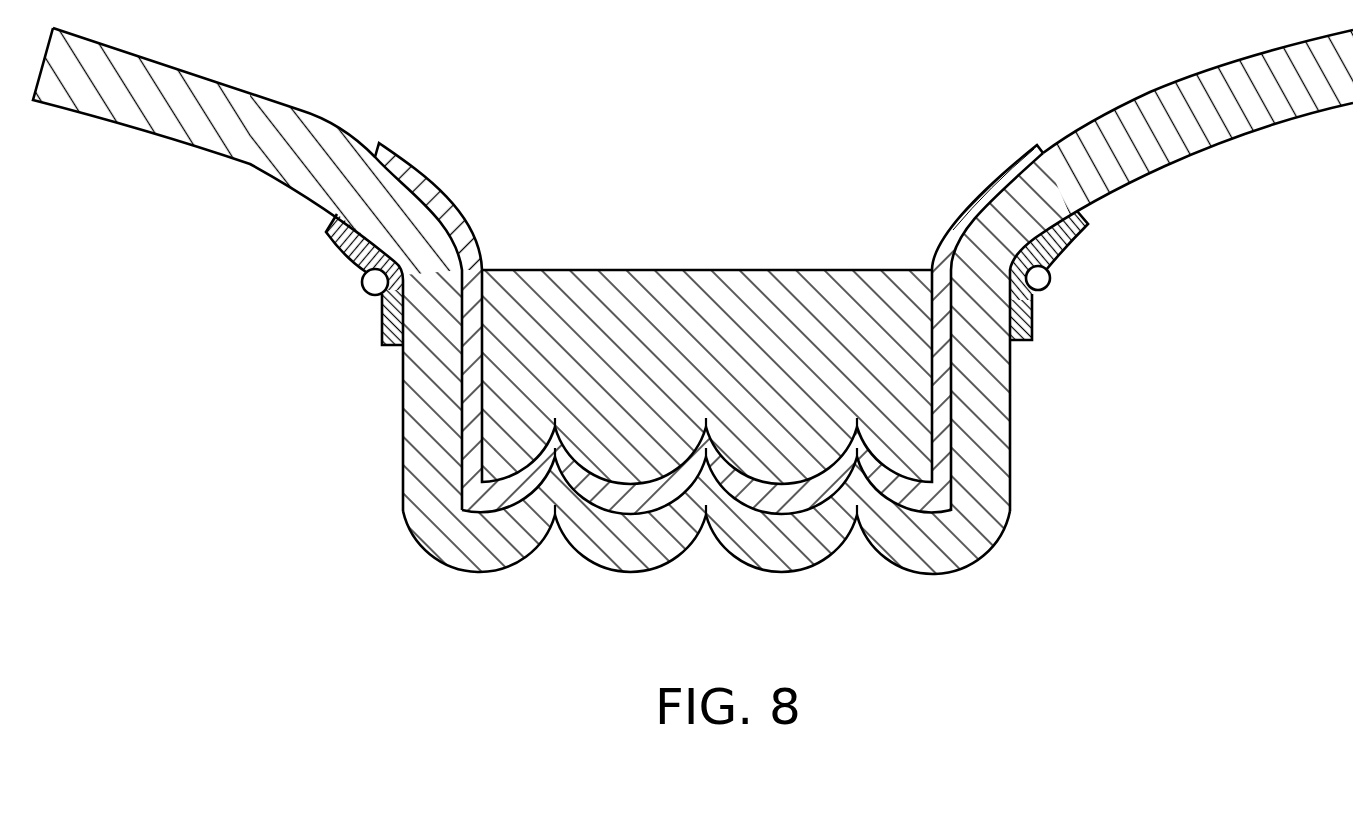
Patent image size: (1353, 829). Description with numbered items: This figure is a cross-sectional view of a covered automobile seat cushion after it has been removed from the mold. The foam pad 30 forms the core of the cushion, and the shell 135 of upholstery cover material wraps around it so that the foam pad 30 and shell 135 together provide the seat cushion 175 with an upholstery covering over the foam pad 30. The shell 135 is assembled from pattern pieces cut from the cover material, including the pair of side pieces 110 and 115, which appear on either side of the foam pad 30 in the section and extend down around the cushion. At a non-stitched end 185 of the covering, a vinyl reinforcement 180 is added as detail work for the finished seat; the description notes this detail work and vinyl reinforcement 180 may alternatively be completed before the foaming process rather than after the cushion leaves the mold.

The foam pad 30 is at (697, 293).
The side piece 110 is at (994, 444).
The side piece 115 is at (416, 441).
The shell 135 is at (377, 133).
The seat cushion 175 is at (903, 568).
The vinyl reinforcement 180 is at (363, 250).
The non-stitched end 185 is at (473, 252).